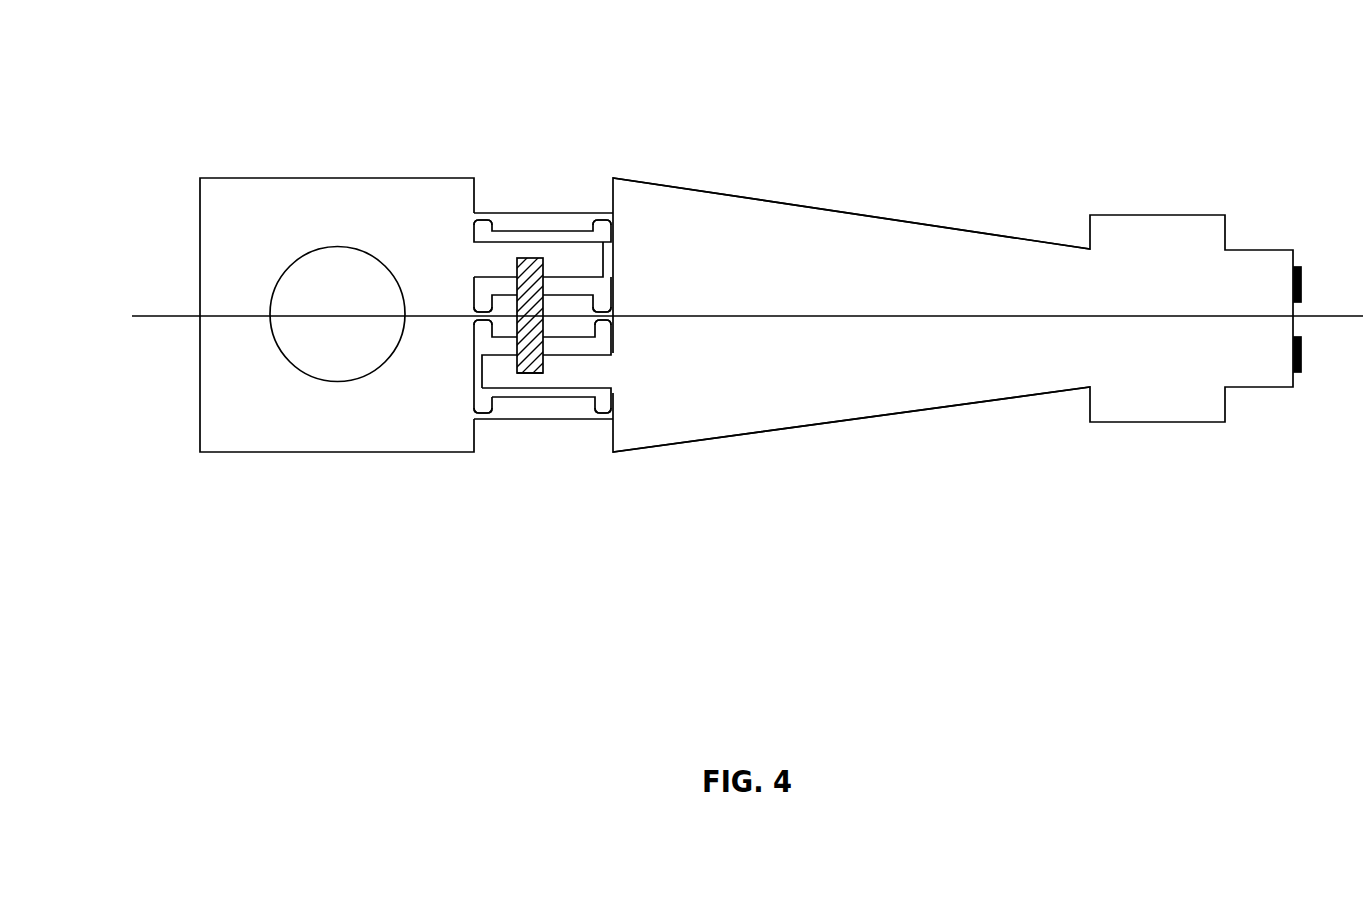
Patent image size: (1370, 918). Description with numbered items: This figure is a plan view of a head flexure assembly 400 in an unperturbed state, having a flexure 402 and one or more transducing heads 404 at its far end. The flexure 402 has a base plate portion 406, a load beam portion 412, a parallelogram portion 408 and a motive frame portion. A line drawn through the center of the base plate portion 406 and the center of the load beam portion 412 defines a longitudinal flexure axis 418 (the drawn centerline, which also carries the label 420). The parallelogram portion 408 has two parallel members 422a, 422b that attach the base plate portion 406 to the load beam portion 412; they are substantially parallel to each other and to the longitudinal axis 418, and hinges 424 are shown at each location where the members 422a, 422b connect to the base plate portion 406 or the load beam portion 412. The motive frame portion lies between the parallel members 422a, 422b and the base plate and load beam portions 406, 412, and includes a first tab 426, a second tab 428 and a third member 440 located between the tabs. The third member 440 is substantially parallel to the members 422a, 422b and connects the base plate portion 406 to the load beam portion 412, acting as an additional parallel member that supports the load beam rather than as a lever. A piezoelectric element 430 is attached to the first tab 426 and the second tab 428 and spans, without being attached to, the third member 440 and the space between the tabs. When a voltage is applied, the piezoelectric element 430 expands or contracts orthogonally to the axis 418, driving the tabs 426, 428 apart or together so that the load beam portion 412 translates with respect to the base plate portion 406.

The head flexure assembly 400 is at (1012, 106).
The flexure 402 is at (232, 178).
The transducing heads 404 is at (1300, 267).
The base plate portion 406 is at (336, 178).
The parallelogram portion 408 is at (543, 213).
The load beam portion 412 is at (826, 210).
The longitudinal flexure axis 418 is at (167, 316).
The centerline 420 is at (920, 317).
The first parallel member 422a is at (562, 213).
The second parallel member 422b is at (540, 419).
The hinges 424 is at (475, 214).
The first tab 426 is at (523, 242).
The second tab 428 is at (507, 388).
The piezoelectric element 430 is at (543, 367).
The third member 440 is at (543, 290).